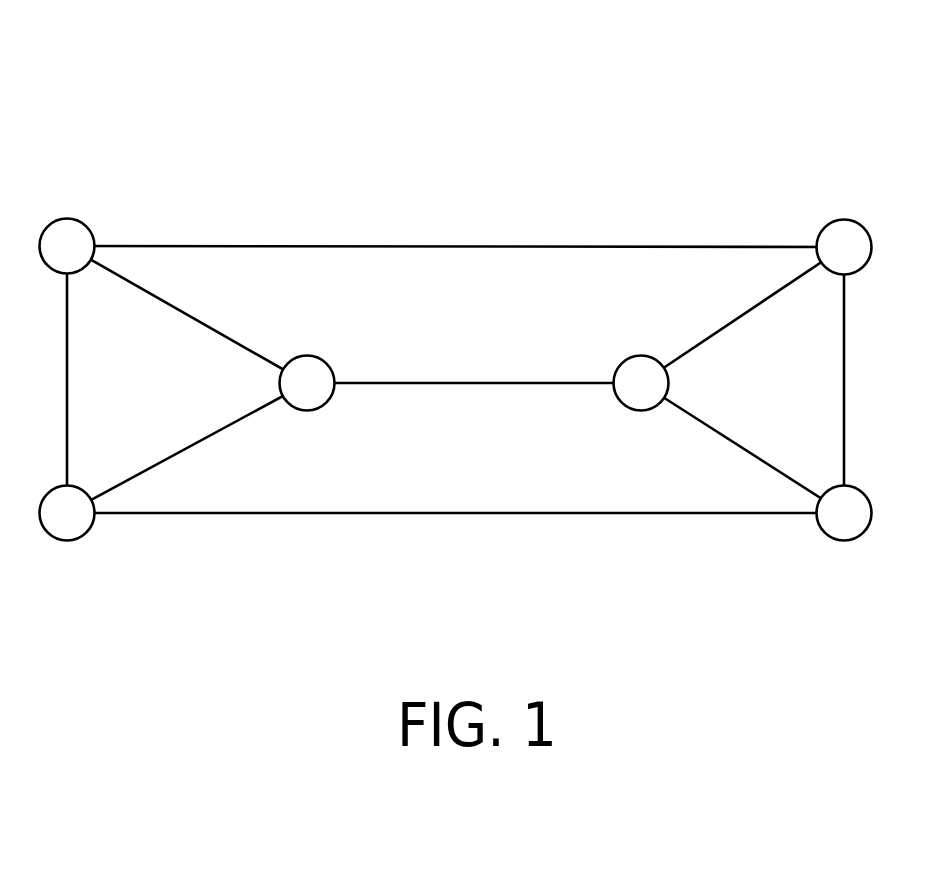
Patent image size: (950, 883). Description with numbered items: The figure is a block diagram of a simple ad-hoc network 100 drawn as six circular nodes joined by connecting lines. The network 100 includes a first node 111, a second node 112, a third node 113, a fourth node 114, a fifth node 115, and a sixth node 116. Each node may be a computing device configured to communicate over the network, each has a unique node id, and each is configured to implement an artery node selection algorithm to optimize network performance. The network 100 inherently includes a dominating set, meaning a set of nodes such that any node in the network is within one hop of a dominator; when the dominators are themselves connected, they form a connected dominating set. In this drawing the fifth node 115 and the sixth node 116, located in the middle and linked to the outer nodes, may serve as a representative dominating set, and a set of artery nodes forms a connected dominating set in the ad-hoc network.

The ad-hoc network 100 is at (596, 73).
The first node 111 is at (98, 204).
The second node 112 is at (812, 202).
The third node 113 is at (98, 568).
The fourth node 114 is at (843, 573).
The fifth node 115 is at (319, 325).
The sixth node 116 is at (614, 334).